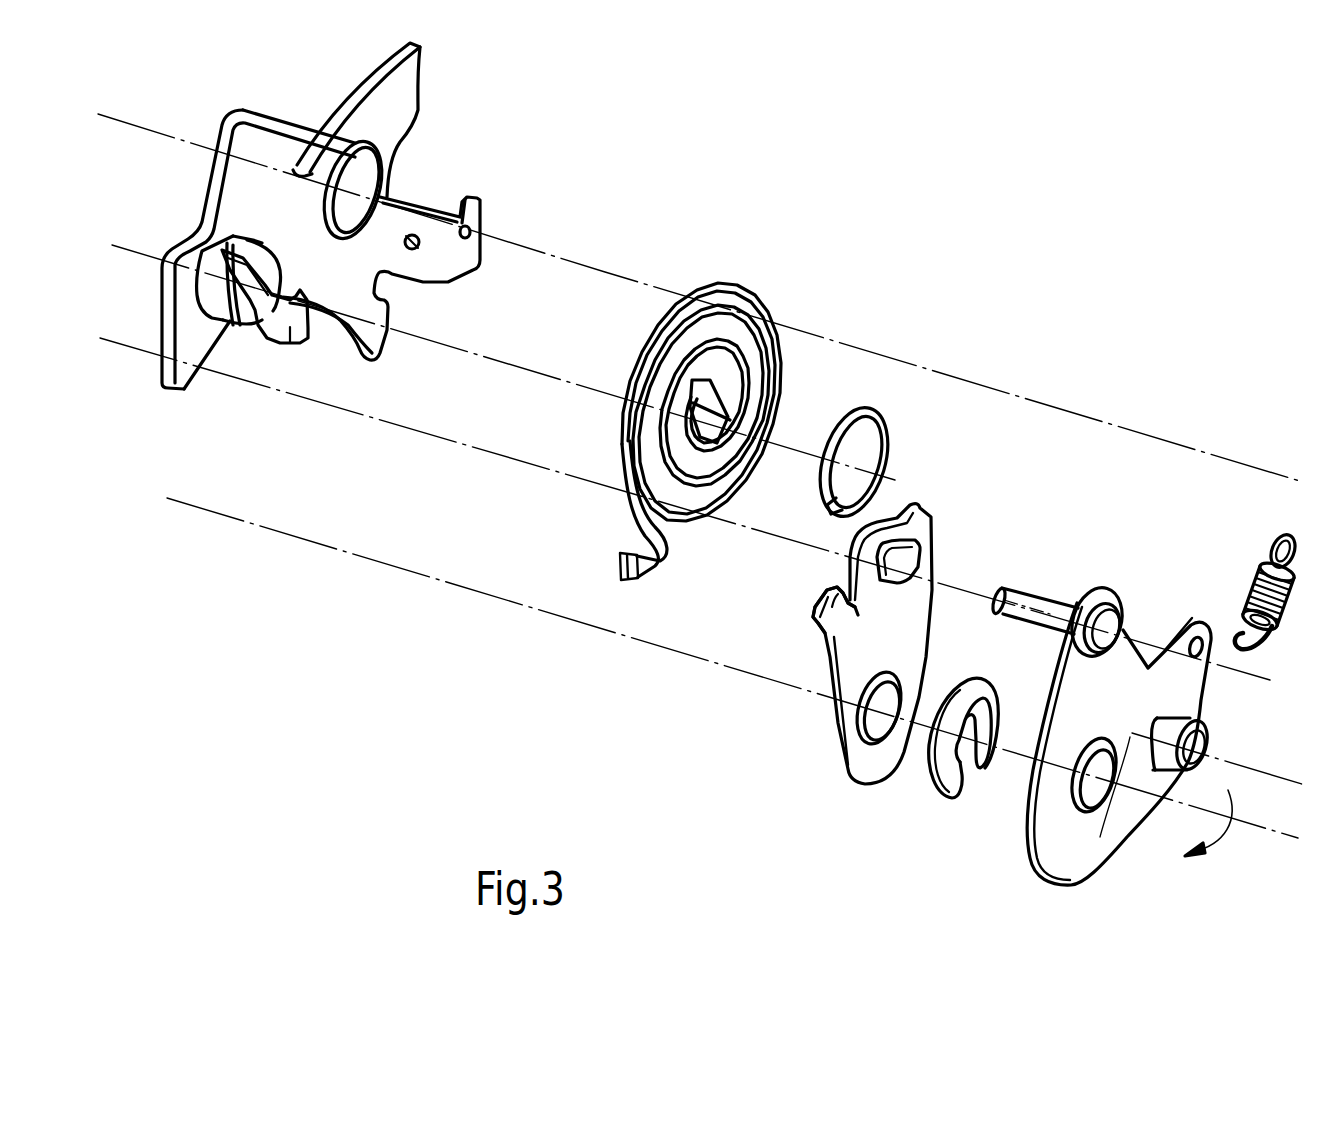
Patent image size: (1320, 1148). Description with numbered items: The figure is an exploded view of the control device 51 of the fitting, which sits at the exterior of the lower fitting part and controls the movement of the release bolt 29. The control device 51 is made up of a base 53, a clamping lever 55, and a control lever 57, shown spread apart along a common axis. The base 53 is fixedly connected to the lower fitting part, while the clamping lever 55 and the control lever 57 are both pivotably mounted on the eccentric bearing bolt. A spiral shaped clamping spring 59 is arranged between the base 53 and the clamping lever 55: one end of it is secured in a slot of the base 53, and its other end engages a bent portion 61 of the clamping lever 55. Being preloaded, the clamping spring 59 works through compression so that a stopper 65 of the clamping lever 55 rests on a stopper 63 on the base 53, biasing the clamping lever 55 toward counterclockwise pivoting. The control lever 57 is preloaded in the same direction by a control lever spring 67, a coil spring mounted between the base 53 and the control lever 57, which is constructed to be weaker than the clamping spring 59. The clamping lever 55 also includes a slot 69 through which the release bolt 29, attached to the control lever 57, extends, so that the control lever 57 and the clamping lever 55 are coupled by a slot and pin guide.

The release bolt 29 is at (1040, 607).
The control device 51 is at (860, 276).
The base 53 is at (280, 213).
The clamping lever 55 is at (865, 663).
The control lever 57 is at (1145, 772).
The clamping spring 59 is at (627, 480).
The bent portion 61 is at (818, 620).
The stopper 63 is at (298, 345).
The stopper 65 is at (902, 482).
The control lever spring 67 is at (1253, 575).
The slot 69 is at (897, 557).